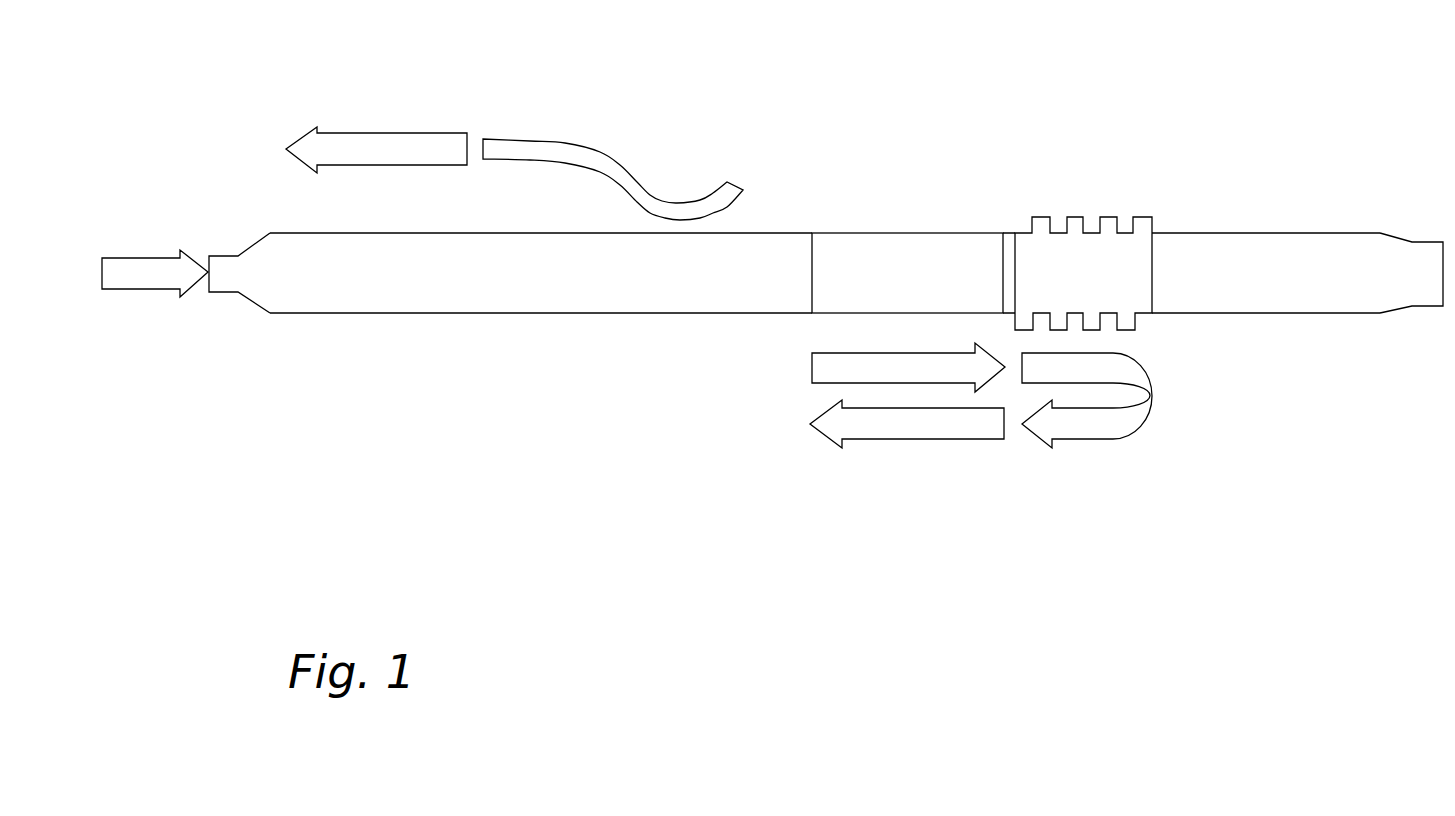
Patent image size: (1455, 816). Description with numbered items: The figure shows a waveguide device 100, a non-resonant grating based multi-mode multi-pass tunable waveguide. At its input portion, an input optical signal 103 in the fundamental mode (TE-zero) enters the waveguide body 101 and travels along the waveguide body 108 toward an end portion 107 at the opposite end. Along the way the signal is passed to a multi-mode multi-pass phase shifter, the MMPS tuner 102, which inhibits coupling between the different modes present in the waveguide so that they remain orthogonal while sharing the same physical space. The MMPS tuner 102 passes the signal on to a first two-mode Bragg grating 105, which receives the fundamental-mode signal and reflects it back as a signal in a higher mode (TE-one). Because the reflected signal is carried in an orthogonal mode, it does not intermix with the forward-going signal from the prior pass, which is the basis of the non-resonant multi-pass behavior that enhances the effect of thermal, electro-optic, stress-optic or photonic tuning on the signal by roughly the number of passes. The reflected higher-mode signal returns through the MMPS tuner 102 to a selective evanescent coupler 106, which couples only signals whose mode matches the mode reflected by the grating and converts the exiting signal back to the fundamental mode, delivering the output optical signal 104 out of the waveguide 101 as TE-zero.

The waveguide device 100 is at (218, 67).
The waveguide body 101 is at (232, 278).
The multi-mode multi-pass phase shifter (MMPS) tuner 102 is at (912, 250).
The input optical signal 103 is at (120, 257).
The exiting optical signal 104 is at (424, 132).
The first two-mode Bragg grating 105 is at (1057, 250).
The selective evanescent coupler 106 is at (688, 210).
The end portion 107 is at (1402, 278).
The waveguide body 108 is at (436, 297).